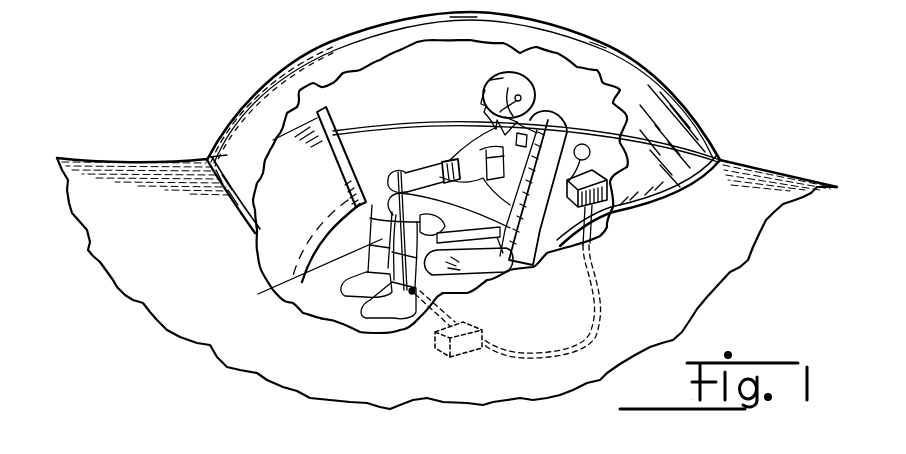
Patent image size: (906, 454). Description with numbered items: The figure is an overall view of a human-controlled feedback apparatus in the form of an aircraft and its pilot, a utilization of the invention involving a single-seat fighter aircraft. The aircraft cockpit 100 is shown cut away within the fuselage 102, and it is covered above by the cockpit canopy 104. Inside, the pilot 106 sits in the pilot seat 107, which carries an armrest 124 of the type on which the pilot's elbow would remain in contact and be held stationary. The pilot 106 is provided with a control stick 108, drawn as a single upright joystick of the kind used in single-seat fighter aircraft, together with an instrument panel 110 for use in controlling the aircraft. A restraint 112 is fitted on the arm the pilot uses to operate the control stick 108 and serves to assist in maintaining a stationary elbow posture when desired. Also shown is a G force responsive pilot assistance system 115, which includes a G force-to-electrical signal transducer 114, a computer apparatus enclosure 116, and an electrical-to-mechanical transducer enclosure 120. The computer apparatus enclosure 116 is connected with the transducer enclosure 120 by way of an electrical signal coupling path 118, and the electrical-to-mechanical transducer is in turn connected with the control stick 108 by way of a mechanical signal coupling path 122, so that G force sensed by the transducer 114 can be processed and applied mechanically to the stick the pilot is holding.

The aircraft cockpit 100 is at (425, 86).
The fuselage 102 is at (92, 172).
The cockpit canopy 104 is at (285, 63).
The pilot 106 is at (478, 137).
The pilot seat 107 is at (483, 263).
The control stick 108 is at (300, 293).
The instrument panel 110 is at (340, 165).
The restraint 112 is at (447, 165).
The G force-to-electrical signal transducer 114 is at (585, 145).
The G force responsive pilot assistance system 115 is at (598, 208).
The computer apparatus enclosure 116 is at (613, 188).
The electrical signal coupling path 118 is at (597, 317).
The electrical-to-mechanical transducer enclosure 120 is at (465, 354).
The mechanical signal coupling path 122 is at (425, 322).
The armrest 124 is at (453, 233).